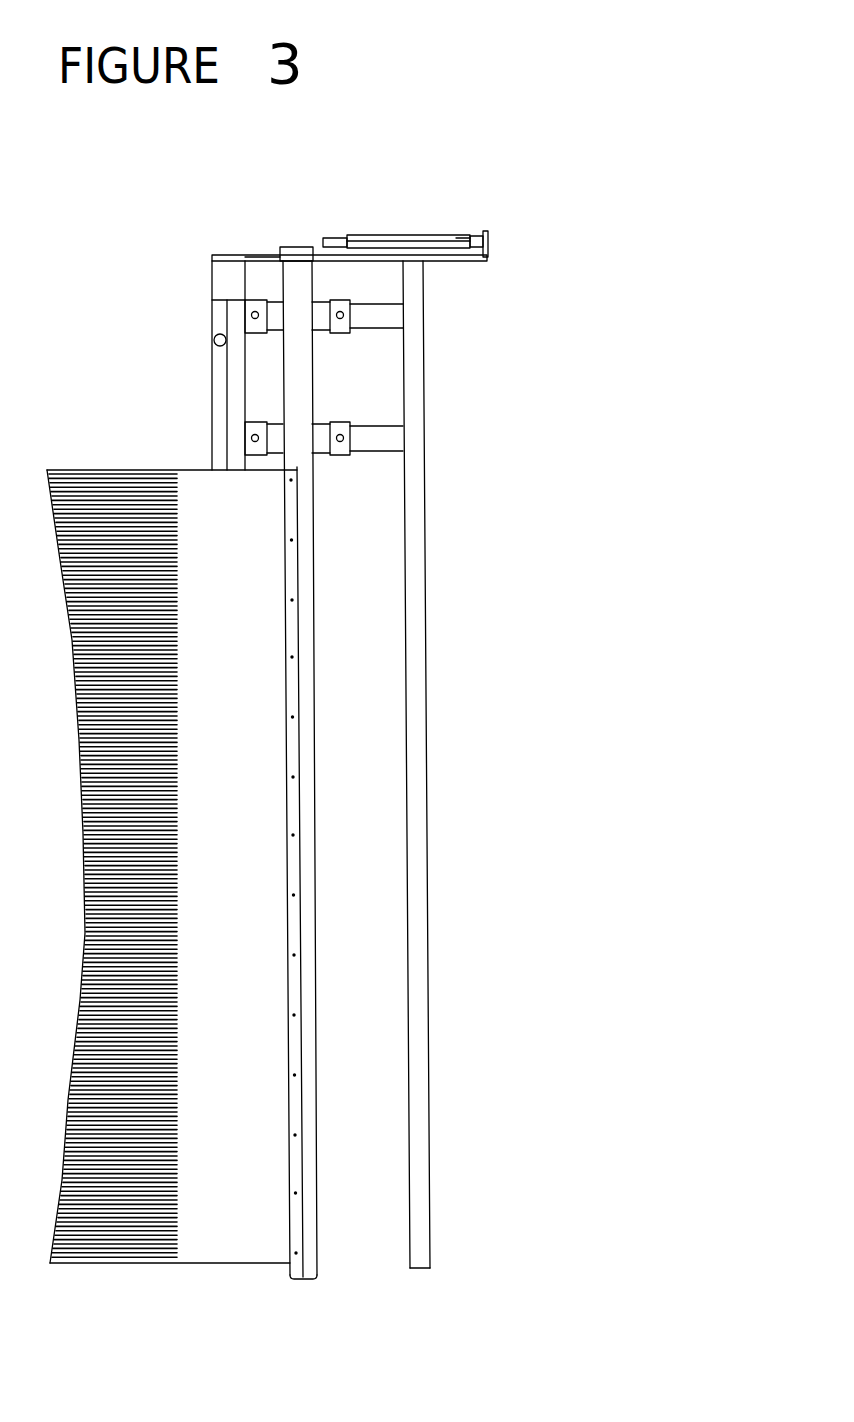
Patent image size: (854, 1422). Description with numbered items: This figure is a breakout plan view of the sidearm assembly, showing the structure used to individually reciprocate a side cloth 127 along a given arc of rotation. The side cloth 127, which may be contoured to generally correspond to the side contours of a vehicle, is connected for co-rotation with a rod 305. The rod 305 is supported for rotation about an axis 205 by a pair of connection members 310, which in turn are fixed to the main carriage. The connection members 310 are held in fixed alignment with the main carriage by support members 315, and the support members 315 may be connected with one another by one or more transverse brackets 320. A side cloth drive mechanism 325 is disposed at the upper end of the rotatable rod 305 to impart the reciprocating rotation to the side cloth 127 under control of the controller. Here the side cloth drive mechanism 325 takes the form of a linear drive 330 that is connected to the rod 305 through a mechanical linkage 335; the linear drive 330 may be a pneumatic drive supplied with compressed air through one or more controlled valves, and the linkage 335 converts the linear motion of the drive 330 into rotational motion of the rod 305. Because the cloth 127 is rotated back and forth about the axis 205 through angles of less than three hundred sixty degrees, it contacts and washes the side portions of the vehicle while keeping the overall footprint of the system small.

The side cloth 127 is at (245, 865).
The axis 205 is at (397, 182).
The rod 305 is at (313, 807).
The connection member 310 is at (331, 300).
The support member 315 is at (227, 393).
The transverse bracket 320 is at (257, 257).
The side cloth drive mechanism 325 is at (355, 212).
The linear drive 330 is at (458, 238).
The mechanical linkage 335 is at (313, 245).